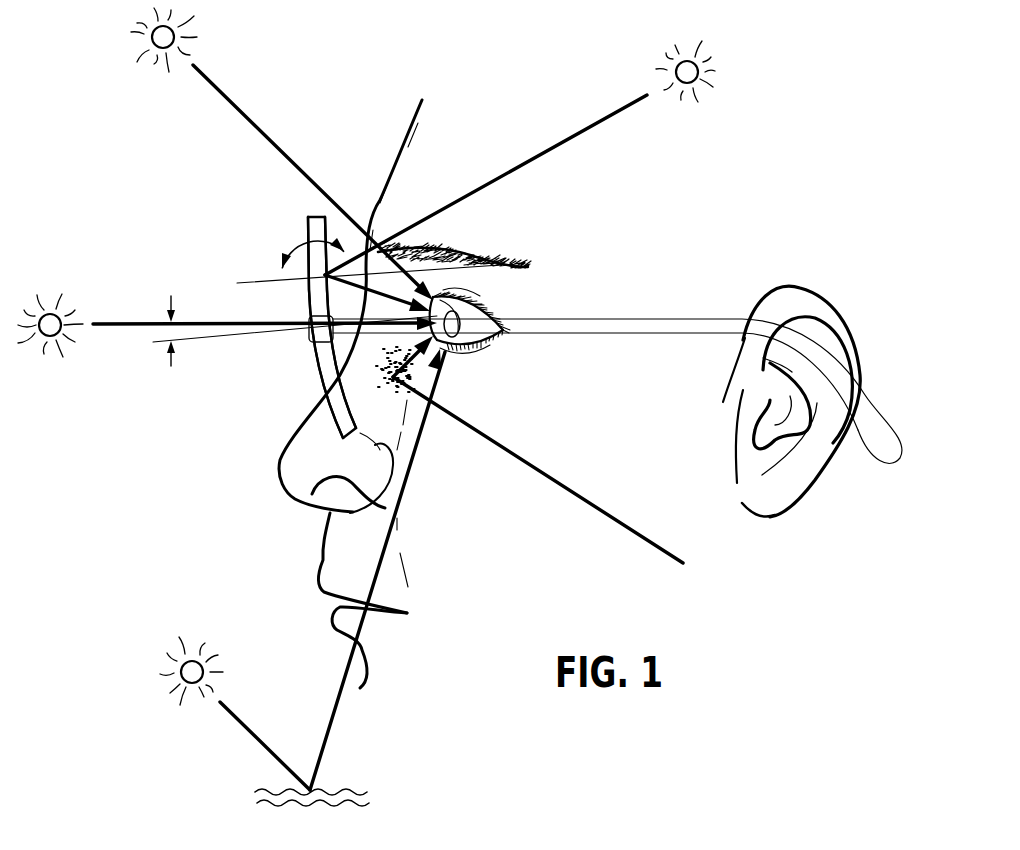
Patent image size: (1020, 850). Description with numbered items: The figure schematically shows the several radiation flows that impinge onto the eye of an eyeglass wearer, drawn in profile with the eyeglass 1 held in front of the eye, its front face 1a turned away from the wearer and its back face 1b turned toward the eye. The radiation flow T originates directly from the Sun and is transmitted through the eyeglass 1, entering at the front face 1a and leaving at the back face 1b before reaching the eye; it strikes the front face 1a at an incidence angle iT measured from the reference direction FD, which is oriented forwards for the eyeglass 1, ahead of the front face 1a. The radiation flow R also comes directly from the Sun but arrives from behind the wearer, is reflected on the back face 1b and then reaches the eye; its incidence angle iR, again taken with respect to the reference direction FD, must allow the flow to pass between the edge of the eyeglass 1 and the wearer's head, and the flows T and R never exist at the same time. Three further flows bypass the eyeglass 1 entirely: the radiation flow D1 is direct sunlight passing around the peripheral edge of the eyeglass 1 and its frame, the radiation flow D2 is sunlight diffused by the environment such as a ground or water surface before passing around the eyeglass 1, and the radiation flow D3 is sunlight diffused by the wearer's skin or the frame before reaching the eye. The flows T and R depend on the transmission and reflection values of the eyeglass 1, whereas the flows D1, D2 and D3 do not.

The eyeglass 1 is at (327, 358).
The front face 1a is at (300, 222).
The back face 1b is at (336, 214).
The radiation flow D1 is at (282, 154).
The radiation flow D2 is at (302, 577).
The radiation flow D3 is at (538, 462).
The radiation flow R is at (520, 176).
The radiation flow T is at (227, 325).
The reference direction FD is at (238, 283).
The incidence angle iR is at (300, 255).
The incidence angle iT is at (182, 342).